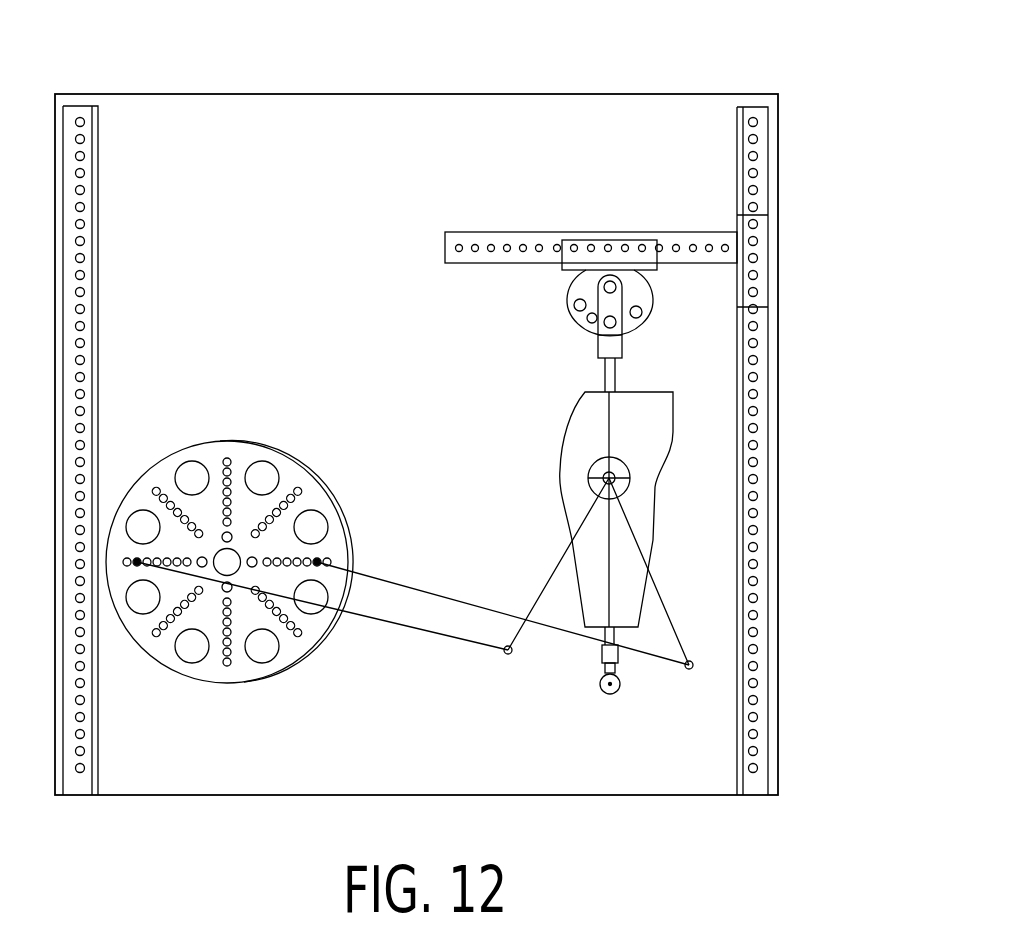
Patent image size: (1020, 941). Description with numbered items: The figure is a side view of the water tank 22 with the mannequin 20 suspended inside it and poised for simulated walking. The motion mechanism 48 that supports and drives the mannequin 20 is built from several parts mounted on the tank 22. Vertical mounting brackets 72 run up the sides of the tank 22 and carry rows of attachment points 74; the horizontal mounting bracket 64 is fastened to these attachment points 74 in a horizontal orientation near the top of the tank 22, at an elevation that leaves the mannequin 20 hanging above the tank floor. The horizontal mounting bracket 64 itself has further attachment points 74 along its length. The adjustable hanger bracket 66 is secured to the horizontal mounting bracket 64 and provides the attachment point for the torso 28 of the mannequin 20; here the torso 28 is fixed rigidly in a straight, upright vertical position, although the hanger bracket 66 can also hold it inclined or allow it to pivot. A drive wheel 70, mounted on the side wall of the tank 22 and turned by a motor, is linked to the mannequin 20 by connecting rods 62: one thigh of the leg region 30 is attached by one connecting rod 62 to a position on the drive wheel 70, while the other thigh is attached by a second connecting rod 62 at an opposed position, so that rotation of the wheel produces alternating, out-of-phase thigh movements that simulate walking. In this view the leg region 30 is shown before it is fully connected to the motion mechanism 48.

The mannequin 20 is at (662, 513).
The water tank 22 is at (675, 94).
The torso 28 is at (589, 414).
The leg region 30 is at (592, 598).
The motion mechanism 48 is at (605, 211).
The connecting rod 62 is at (378, 578).
The horizontal mounting bracket 64 is at (480, 212).
The adjustable hanger bracket 66 is at (662, 321).
The drive wheel 70 is at (170, 450).
The vertical mounting bracket 72 is at (98, 270).
The attachment points 74 is at (693, 243).